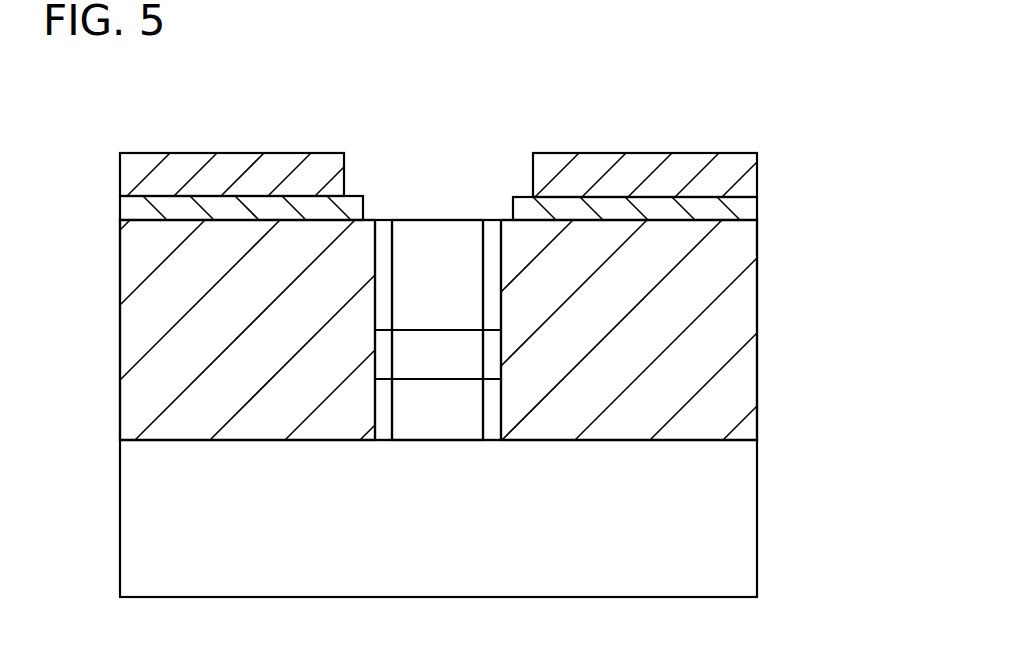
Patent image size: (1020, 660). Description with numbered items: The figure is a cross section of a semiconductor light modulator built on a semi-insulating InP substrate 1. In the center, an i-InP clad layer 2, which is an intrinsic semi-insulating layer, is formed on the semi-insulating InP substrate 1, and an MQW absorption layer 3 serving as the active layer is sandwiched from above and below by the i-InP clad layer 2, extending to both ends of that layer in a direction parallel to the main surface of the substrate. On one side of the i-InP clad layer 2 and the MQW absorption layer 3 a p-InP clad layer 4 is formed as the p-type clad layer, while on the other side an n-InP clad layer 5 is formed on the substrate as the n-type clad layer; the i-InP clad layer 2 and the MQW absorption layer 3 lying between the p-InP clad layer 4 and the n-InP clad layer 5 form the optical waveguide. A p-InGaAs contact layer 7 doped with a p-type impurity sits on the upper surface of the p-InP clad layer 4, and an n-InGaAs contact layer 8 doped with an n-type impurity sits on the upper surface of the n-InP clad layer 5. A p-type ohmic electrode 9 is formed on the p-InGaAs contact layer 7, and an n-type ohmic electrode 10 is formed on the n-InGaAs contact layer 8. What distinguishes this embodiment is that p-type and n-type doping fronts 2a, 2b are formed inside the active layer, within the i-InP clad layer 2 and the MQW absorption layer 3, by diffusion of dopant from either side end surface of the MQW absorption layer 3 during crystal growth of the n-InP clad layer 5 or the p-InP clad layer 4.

The semi-insulating InP substrate 1 is at (680, 522).
The i-InP clad layer 2 is at (455, 273).
The p-type doping front 2a is at (483, 240).
The n-type doping front 2b is at (392, 240).
The MQW absorption layer 3 is at (455, 353).
The p-InP clad layer 4 is at (703, 303).
The n-InP clad layer 5 is at (170, 322).
The p-InGaAs contact layer 7 is at (700, 211).
The n-InGaAs contact layer 8 is at (140, 210).
The p-type ohmic electrode 9 is at (723, 182).
The n-type ohmic electrode 10 is at (150, 173).